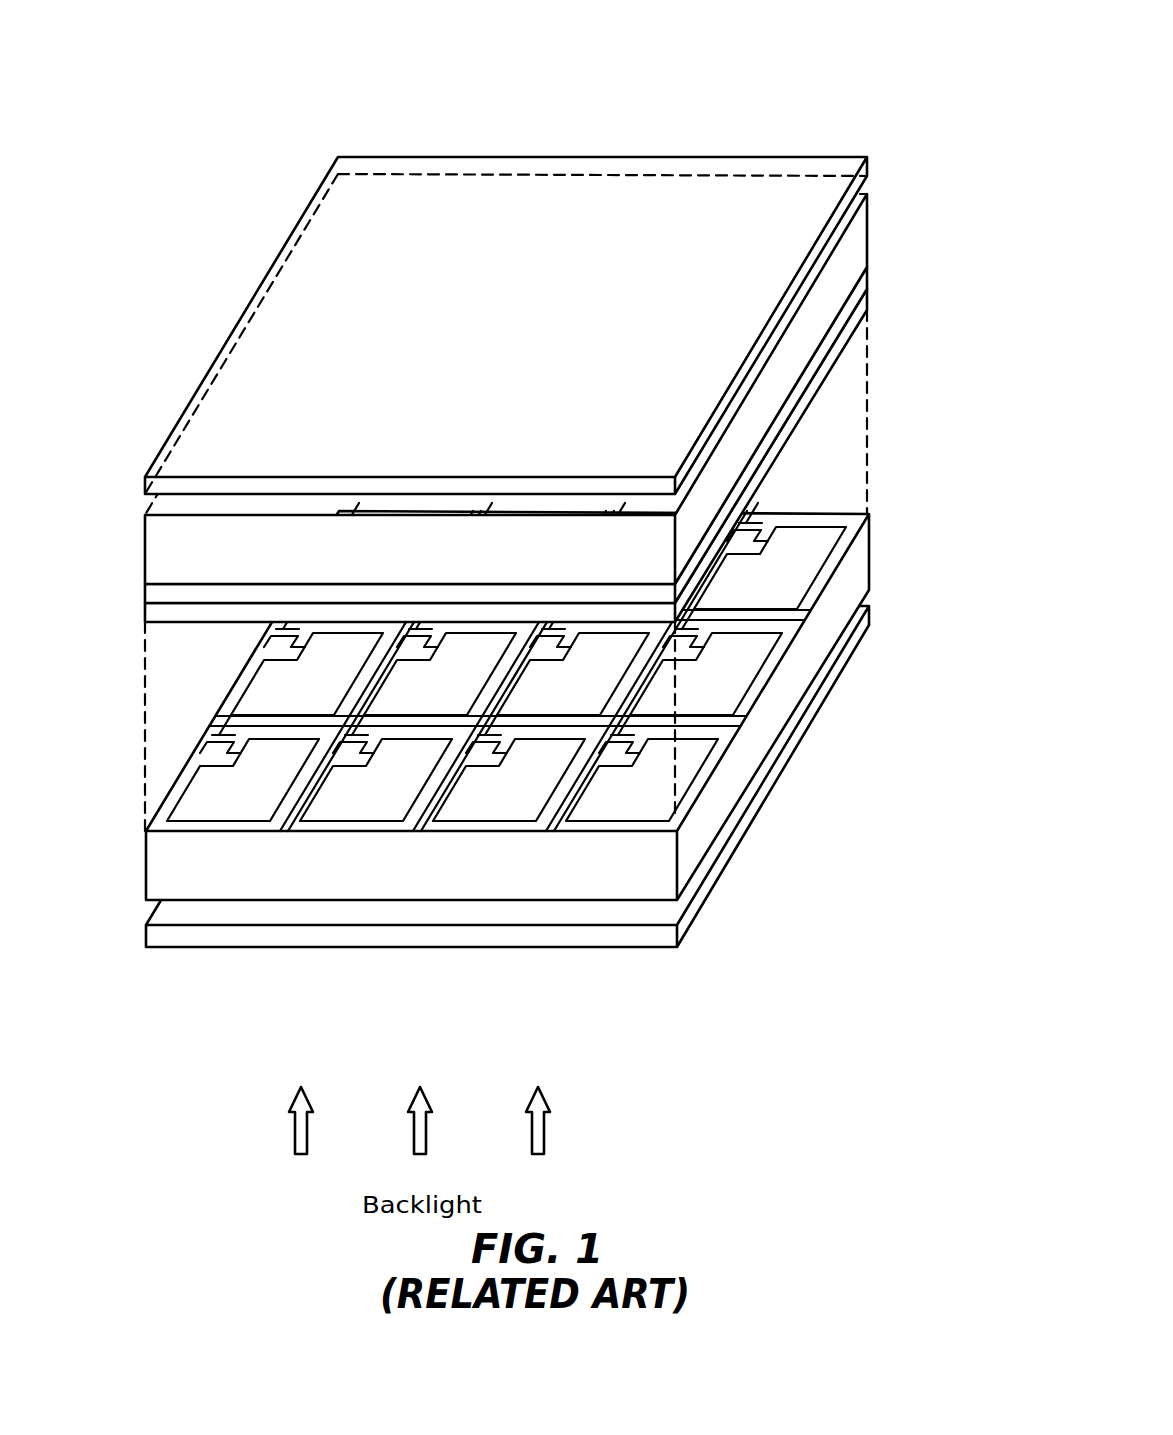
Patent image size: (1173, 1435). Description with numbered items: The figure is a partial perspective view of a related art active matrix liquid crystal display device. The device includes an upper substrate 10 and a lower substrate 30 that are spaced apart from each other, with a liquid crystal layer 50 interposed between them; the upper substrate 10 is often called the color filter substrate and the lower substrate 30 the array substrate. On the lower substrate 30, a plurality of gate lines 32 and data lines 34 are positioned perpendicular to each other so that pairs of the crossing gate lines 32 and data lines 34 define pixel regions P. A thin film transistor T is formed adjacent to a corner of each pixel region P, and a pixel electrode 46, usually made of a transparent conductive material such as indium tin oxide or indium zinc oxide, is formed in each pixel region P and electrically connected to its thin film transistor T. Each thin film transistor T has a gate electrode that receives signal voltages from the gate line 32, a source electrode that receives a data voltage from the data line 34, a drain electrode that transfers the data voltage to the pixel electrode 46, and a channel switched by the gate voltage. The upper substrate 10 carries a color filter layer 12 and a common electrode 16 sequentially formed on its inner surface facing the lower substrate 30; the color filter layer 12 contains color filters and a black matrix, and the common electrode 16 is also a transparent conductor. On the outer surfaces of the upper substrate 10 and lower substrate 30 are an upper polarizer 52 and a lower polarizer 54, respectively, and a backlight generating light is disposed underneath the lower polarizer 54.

The upper substrate 10 is at (145, 515).
The color filter layer 12 is at (867, 276).
The common electrode 16 is at (867, 299).
The lower substrate 30 is at (145, 833).
The gate line 32 is at (526, 727).
The data line 34 is at (553, 817).
The pixel electrode 46 is at (697, 779).
The liquid crystal layer 50 is at (145, 623).
The upper polarizer 52 is at (775, 160).
The lower polarizer 54 is at (821, 695).
The pixel region P is at (352, 822).
The thin film transistor T is at (620, 772).